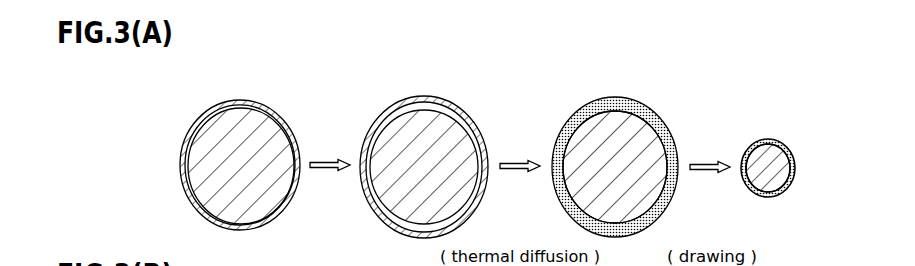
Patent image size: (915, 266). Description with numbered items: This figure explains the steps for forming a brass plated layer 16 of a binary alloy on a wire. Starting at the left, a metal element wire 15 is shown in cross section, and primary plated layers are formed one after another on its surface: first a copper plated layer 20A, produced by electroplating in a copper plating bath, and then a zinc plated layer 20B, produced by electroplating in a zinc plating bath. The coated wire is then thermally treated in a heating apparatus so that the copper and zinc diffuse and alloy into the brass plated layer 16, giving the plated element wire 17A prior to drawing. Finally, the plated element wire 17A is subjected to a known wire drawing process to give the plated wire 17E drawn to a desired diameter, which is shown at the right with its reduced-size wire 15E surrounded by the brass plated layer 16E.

The metal element wire 15 is at (233, 128).
The copper plated layer 20A is at (272, 112).
The zinc plated layer 20B is at (437, 97).
The brass plated layer 16 is at (622, 108).
The plated element wire prior to drawing 17A is at (653, 131).
The plated wire after drawing 17E is at (809, 130).
The wire in the drawn plated wire 15E is at (794, 152).
The brass plated layer in the drawn plated wire 16E is at (794, 178).